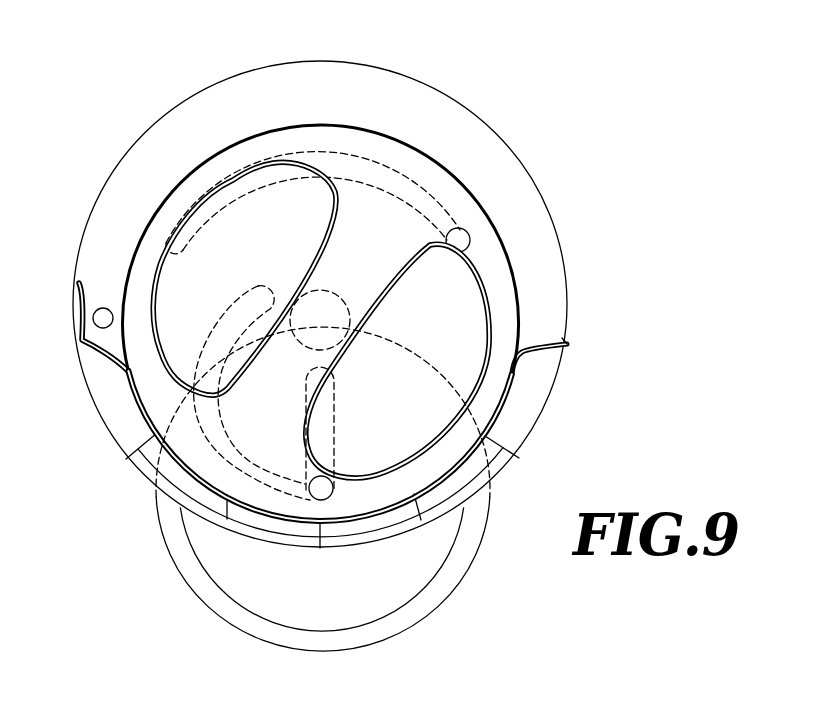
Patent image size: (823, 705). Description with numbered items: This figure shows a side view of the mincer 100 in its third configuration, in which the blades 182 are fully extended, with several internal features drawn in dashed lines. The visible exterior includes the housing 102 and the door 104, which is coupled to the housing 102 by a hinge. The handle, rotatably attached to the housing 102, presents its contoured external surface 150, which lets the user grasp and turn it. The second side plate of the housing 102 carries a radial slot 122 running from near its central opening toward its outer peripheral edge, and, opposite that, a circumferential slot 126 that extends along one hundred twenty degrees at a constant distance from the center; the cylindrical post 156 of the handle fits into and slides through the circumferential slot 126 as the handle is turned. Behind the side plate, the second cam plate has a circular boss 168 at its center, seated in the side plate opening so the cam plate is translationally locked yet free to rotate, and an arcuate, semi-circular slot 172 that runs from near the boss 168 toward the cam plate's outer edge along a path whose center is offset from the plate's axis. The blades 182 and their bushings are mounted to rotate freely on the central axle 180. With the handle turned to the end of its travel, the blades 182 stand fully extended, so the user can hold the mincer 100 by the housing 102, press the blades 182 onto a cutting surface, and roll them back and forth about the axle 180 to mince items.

The mincer 100 is at (135, 64).
The housing 102 is at (438, 128).
The door 104 is at (531, 399).
The slot 122 is at (340, 428).
The circumferential slot 126 is at (430, 200).
The external surface 150 is at (160, 388).
The cylindrical post 156 is at (470, 238).
The circular boss 168 is at (322, 312).
The slot 172 is at (212, 447).
The axle 180 is at (310, 492).
The blades 182 is at (318, 622).